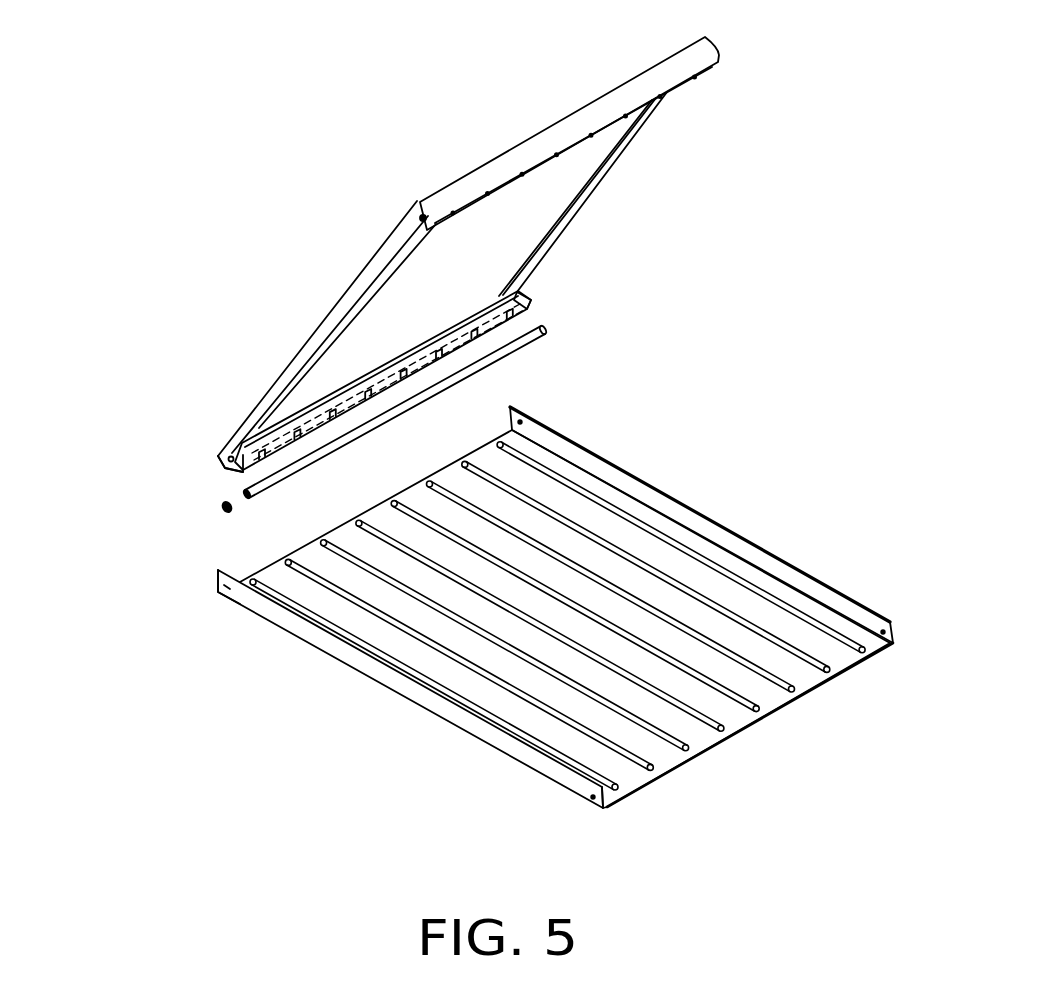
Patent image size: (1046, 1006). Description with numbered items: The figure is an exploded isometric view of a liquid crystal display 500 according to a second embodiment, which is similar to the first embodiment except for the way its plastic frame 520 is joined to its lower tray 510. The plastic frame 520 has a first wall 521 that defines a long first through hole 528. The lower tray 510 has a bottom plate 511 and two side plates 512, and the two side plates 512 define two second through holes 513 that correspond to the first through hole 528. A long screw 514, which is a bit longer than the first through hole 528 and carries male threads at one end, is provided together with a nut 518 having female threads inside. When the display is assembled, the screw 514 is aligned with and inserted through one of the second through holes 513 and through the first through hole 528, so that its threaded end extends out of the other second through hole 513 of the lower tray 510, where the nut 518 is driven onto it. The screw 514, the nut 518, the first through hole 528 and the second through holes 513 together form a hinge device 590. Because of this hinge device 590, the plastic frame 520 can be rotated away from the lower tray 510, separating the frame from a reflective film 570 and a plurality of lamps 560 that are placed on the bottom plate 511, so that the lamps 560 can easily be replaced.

The liquid crystal display 500 is at (342, 114).
The lower tray 510 is at (633, 858).
The bottom plate 511 is at (615, 803).
The side plates 512 is at (513, 752).
The second through holes 513 is at (226, 586).
The screw 514 is at (266, 498).
The nut 518 is at (222, 512).
The plastic frame 520 is at (336, 251).
The first wall 521 is at (527, 308).
The first through hole 528 is at (222, 463).
The lamps 560 is at (578, 488).
The reflective film 570 is at (633, 540).
The hinge device 590 is at (142, 458).